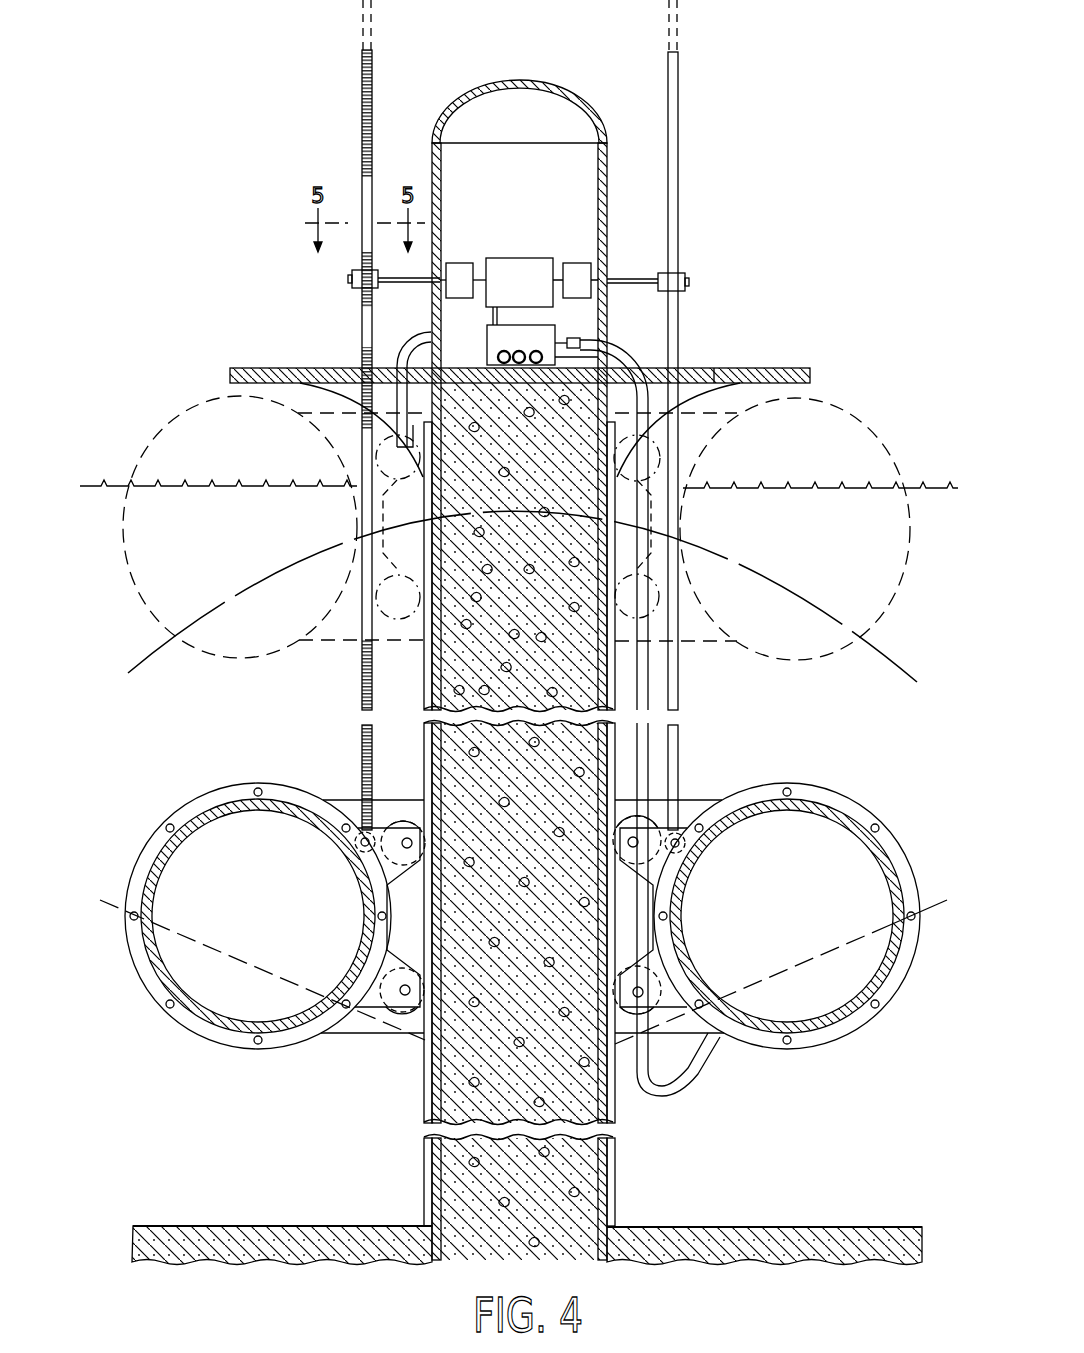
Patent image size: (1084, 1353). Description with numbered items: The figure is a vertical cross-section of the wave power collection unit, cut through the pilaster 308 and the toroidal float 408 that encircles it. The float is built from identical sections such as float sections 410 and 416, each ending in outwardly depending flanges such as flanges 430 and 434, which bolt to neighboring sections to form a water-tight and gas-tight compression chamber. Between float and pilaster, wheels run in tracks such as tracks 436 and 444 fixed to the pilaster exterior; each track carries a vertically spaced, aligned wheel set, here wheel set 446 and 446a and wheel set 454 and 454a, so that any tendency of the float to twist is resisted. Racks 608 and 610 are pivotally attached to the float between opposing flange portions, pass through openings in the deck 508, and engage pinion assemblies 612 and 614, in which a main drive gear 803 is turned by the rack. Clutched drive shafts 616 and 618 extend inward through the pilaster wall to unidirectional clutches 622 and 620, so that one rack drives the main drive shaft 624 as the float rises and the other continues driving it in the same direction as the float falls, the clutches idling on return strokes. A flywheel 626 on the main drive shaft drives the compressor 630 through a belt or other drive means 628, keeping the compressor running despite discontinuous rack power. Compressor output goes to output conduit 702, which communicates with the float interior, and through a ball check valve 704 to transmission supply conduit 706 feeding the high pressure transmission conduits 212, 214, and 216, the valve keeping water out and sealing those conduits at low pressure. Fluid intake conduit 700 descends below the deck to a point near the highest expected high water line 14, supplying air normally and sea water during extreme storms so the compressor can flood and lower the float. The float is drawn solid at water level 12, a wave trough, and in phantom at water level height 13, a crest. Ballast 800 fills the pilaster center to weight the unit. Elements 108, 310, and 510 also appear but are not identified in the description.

The water level 12 is at (925, 905).
The phantom water level height 13 is at (890, 658).
The highest expected high water line 14 is at (192, 483).
The drive assembly 108 is at (557, 301).
The high pressure compressed air transmission conduit 212 is at (497, 356).
The high pressure compressed air transmission conduit 214 is at (510, 364).
The high pressure compressed air transmission conduit 216 is at (532, 366).
The pilaster 308 is at (604, 1175).
The pile cap 310 is at (497, 88).
The float 408 is at (541, 865).
The float section 410 is at (250, 917).
The float section 416 is at (888, 958).
The outwardly depending flange 430 is at (813, 940).
The outwardly depending flange 434 is at (207, 1030).
The track 436 is at (428, 1105).
The track 444 is at (614, 1195).
The wheel 446 is at (413, 828).
The wheel 446a is at (407, 1012).
The wheel 454 is at (640, 828).
The wheel 454a is at (640, 1012).
The deck 508 is at (782, 372).
The platform opening 510 is at (718, 378).
The rack 608 is at (679, 688).
The rack 610 is at (319, 415).
The pinion assembly 612 is at (688, 282).
The pinion assembly 614 is at (352, 282).
The clutched drive shaft 616 is at (612, 278).
The clutched drive shaft 618 is at (421, 280).
The unidirectional clutch 620 is at (458, 263).
The unidirectional clutch 622 is at (577, 263).
The main drive shaft 624 is at (485, 280).
The flywheel 626 is at (521, 258).
The belt or other drive means 628 is at (492, 315).
The compressor 630 is at (540, 338).
The fluid intake conduit 700 is at (420, 345).
The output conduit 702 is at (606, 346).
The ball check valve 704 is at (583, 343).
The transmission supply conduit 706 is at (622, 360).
The ballast 800 is at (580, 1152).
The main drive gear 803 is at (362, 288).